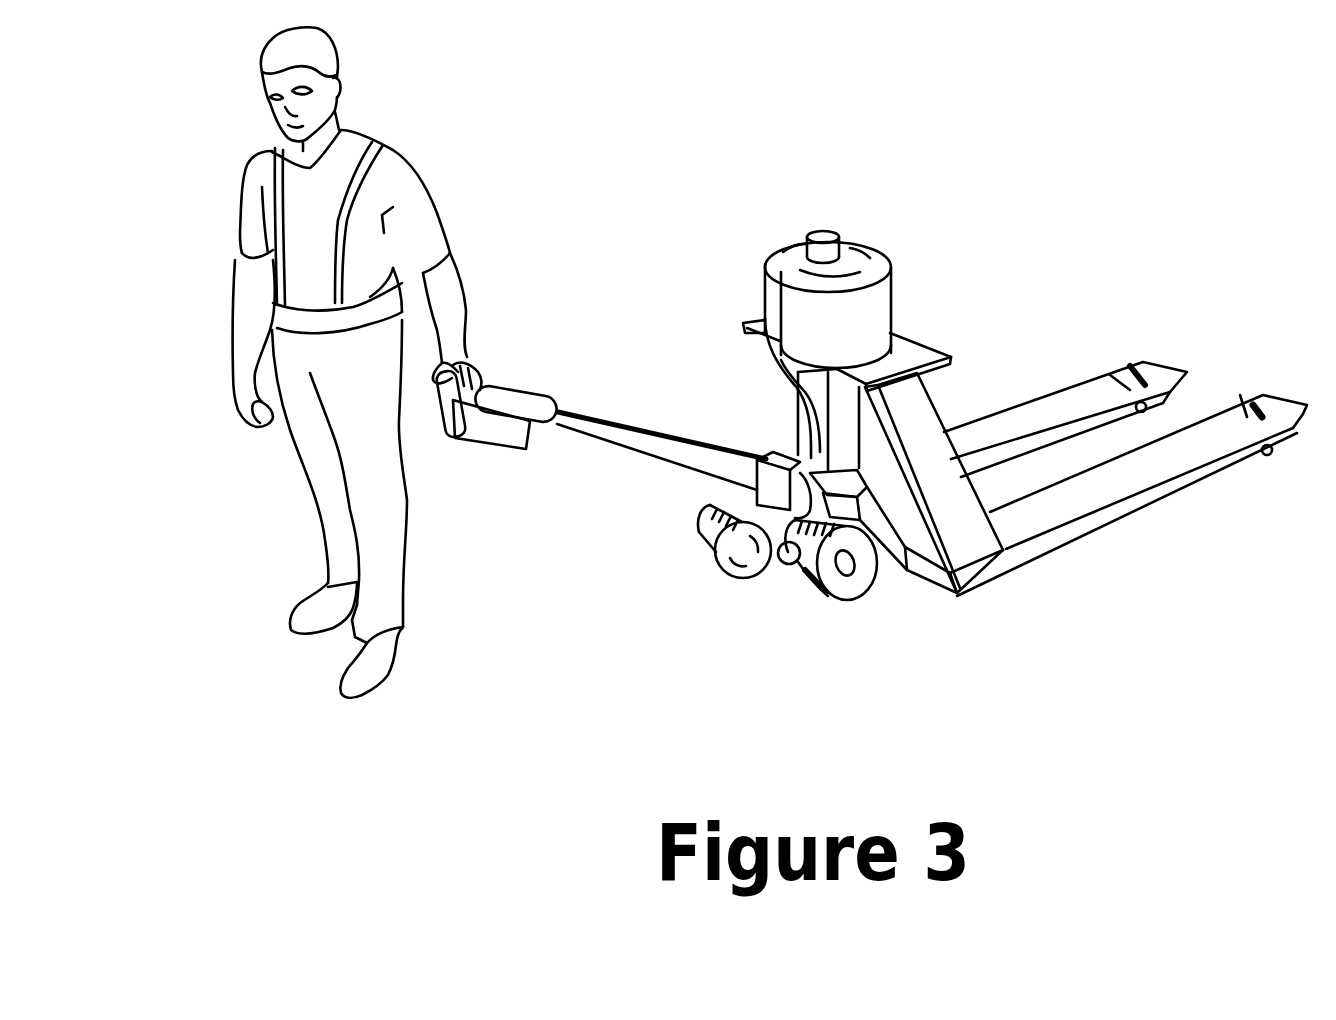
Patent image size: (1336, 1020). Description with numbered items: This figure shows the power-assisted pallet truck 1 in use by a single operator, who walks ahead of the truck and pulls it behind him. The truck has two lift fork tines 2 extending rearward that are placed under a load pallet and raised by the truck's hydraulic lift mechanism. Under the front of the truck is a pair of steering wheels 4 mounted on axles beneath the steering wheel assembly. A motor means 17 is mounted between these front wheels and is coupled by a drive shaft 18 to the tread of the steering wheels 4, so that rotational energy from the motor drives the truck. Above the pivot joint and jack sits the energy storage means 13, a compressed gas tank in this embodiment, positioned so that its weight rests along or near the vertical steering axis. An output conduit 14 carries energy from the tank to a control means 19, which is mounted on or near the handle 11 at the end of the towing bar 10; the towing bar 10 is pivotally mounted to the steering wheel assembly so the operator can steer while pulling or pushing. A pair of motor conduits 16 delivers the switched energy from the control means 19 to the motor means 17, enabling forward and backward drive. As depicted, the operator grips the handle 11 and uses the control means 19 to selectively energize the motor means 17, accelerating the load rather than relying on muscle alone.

The power-assisted pallet truck 1 is at (1122, 294).
The lift fork tines 2 is at (1153, 457).
The steering wheels 4 is at (850, 590).
The towing bar 10 is at (667, 452).
The handle 11 is at (497, 443).
The energy storage means 13 is at (862, 240).
The output conduit 14 is at (774, 307).
The motor conduits 16 is at (700, 478).
The motor means 17 is at (735, 545).
The drive shaft 18 is at (780, 570).
The control means 19 is at (525, 396).